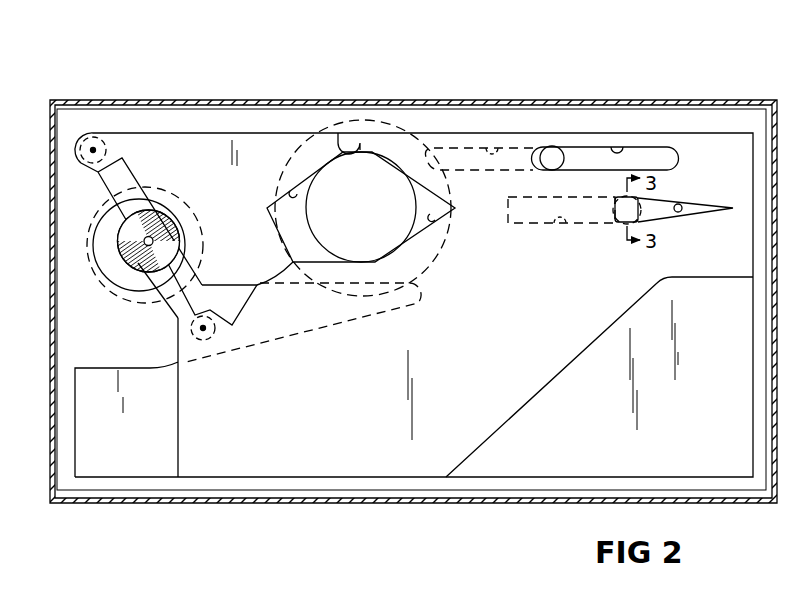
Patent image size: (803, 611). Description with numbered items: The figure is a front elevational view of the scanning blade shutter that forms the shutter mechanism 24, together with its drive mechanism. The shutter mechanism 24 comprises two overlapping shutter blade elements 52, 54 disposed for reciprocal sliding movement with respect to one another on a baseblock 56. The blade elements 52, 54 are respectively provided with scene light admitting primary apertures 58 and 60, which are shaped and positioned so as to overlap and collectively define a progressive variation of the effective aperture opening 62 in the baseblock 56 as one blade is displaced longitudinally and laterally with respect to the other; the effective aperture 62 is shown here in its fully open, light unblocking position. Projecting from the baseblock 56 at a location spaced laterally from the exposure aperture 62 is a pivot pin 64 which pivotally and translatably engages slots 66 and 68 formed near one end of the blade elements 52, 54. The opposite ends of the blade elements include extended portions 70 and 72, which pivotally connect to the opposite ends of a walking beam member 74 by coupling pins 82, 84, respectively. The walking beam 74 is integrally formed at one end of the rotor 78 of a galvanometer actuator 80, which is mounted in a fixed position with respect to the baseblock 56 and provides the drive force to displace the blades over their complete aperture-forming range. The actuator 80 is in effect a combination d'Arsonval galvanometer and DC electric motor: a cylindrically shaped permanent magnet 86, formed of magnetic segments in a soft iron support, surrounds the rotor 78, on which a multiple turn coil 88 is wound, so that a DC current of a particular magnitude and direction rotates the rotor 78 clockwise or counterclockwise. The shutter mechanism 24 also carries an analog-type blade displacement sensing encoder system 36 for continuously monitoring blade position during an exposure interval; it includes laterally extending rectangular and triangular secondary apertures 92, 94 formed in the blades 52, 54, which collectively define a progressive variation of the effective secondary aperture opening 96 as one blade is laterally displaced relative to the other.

The shutter mechanism 24 is at (190, 51).
The blade displacement sensing encoder system 36 is at (593, 244).
The shutter blade element 52 is at (208, 143).
The shutter blade element 54 is at (190, 430).
The baseblock 56 is at (443, 104).
The primary aperture 58 is at (268, 207).
The primary aperture 60 is at (433, 218).
The effective aperture opening 62 is at (340, 213).
The pivot pin 64 is at (553, 156).
The slot 66 is at (492, 146).
The slot 68 is at (627, 150).
The extended portion 70 is at (115, 138).
The extended portion 72 is at (182, 336).
The walking beam member 74 is at (112, 186).
The rotor 78 is at (140, 259).
The galvanometer actuator 80 is at (107, 283).
The coupling pin 82 is at (91, 149).
The coupling pin 84 is at (205, 330).
The permanent magnet 86 is at (104, 235).
The multiple turn coil 88 is at (177, 222).
The secondary aperture 92 is at (553, 214).
The secondary aperture 94 is at (684, 202).
The effective secondary aperture opening 96 is at (620, 205).